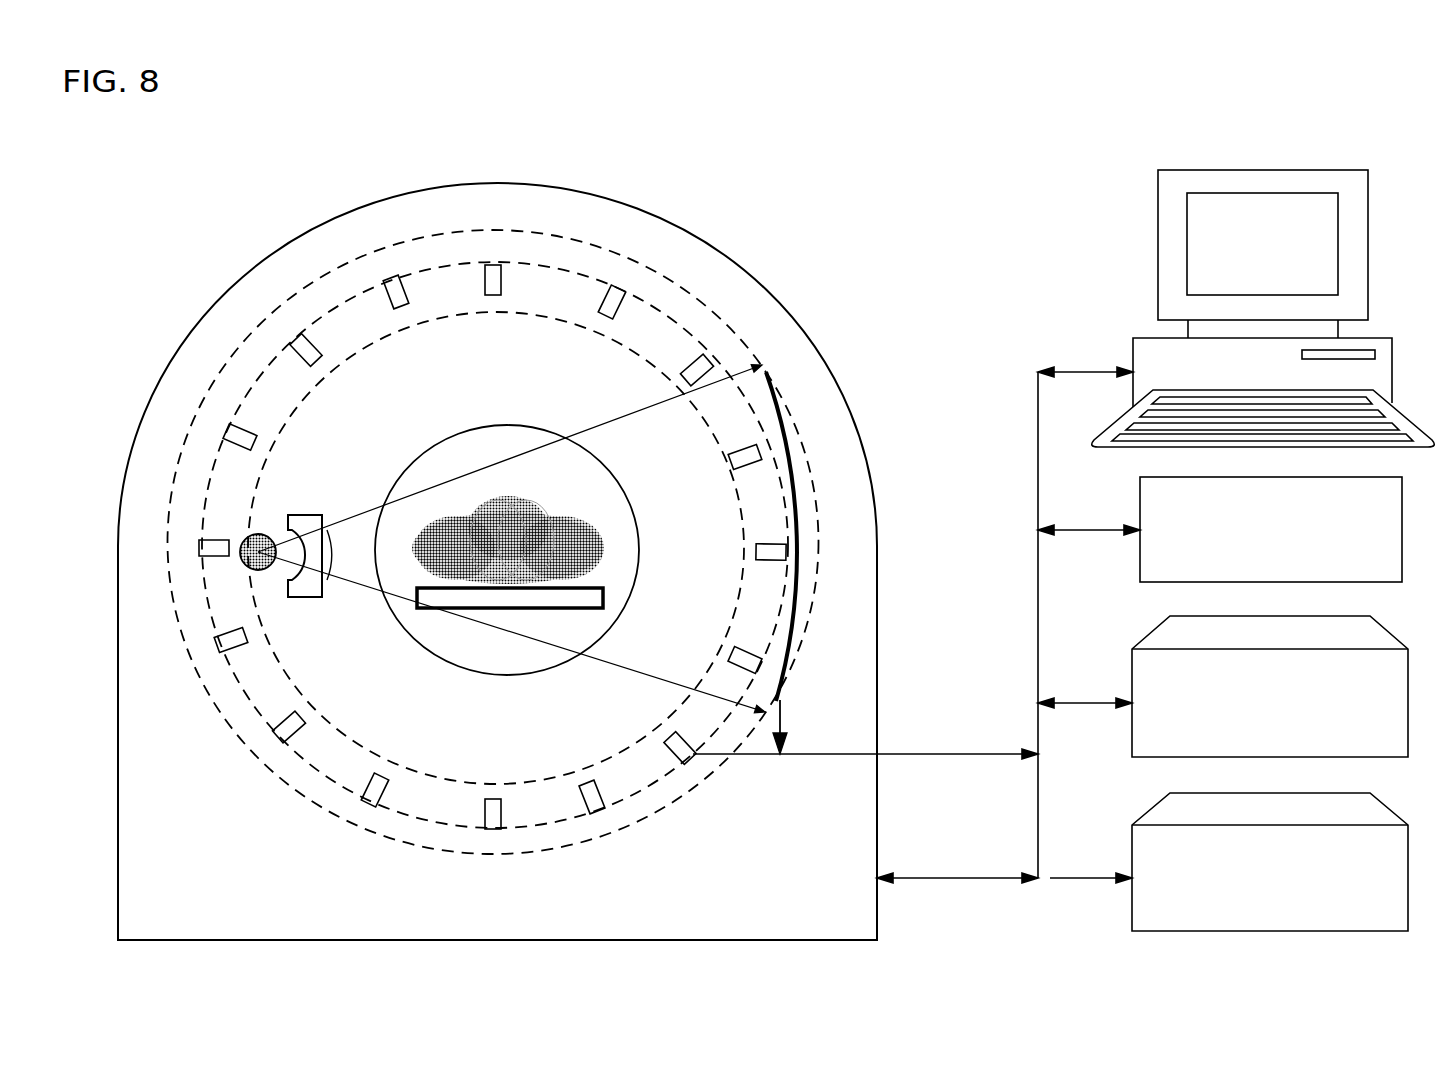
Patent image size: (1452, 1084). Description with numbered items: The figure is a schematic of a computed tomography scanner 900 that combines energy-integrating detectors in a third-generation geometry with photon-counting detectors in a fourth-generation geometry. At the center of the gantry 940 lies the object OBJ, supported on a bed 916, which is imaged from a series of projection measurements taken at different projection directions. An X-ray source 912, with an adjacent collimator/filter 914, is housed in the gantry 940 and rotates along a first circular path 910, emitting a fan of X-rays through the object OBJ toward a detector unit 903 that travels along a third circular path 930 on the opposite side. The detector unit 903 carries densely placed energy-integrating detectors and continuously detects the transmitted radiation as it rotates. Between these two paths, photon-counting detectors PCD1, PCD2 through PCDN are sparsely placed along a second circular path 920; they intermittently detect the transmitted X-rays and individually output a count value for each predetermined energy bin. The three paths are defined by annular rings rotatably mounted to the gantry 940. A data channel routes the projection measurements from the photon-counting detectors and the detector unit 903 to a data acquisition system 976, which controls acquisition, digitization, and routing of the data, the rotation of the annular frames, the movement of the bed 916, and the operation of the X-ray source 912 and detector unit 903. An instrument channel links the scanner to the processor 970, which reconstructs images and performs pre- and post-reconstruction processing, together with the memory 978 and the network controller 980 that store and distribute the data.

The CT scanner 900 is at (680, 106).
The detector unit 903 is at (783, 420).
The first circular path 910 is at (343, 738).
The X-ray source 912 is at (249, 565).
The collimator/filter 914 is at (289, 520).
The bed 916 is at (485, 609).
The second circular path 920 is at (407, 818).
The third circular path 930 is at (563, 848).
The gantry 940 is at (749, 281).
The processor 970 is at (1263, 308).
The data acquisition system 976 is at (1270, 862).
The memory 978 is at (1270, 686).
The network controller 980 is at (1271, 529).
The photon-counting detector PCD1 is at (494, 266).
The photon-counting detector PCD2 is at (617, 288).
The photon-counting detector PCDN is at (392, 280).
The object OBJ is at (455, 520).